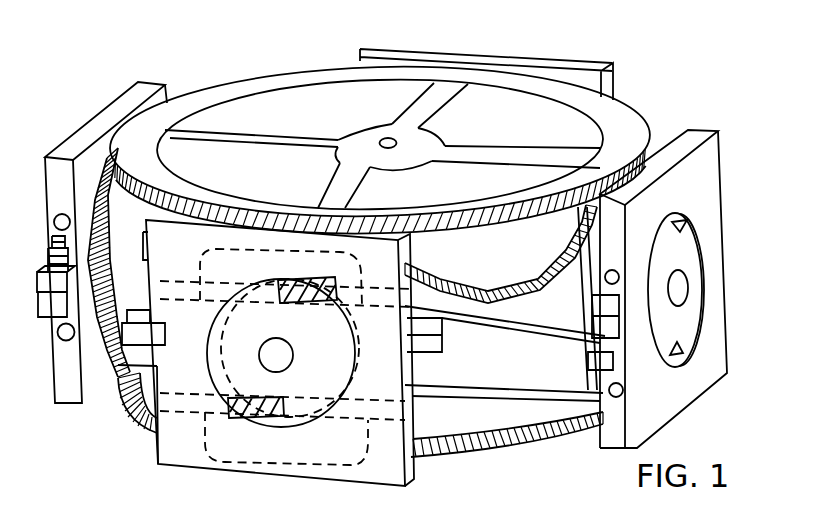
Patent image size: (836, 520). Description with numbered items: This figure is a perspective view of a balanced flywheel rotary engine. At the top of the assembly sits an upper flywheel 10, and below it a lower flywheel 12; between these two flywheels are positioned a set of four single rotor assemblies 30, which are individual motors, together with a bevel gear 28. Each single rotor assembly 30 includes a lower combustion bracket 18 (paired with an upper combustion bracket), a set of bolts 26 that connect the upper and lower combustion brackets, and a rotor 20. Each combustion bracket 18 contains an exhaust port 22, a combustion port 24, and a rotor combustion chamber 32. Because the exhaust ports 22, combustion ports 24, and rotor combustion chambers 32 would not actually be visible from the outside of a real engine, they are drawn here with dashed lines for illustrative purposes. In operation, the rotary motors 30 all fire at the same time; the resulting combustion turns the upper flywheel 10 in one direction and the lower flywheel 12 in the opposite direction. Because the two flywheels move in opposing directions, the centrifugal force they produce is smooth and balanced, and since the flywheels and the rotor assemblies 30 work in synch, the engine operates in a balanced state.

The upper flywheel 10 is at (624, 120).
The lower flywheel 12 is at (553, 447).
The lower combustion bracket 18 is at (181, 250).
The rotor 20 is at (327, 337).
The exhaust port 22 is at (212, 255).
The combustion port 24 is at (330, 257).
The bolts 26 is at (140, 308).
The bevel gear 28 is at (117, 377).
The single rotor assemblies 30 is at (92, 102).
The rotor combustion chamber 32 is at (300, 306).